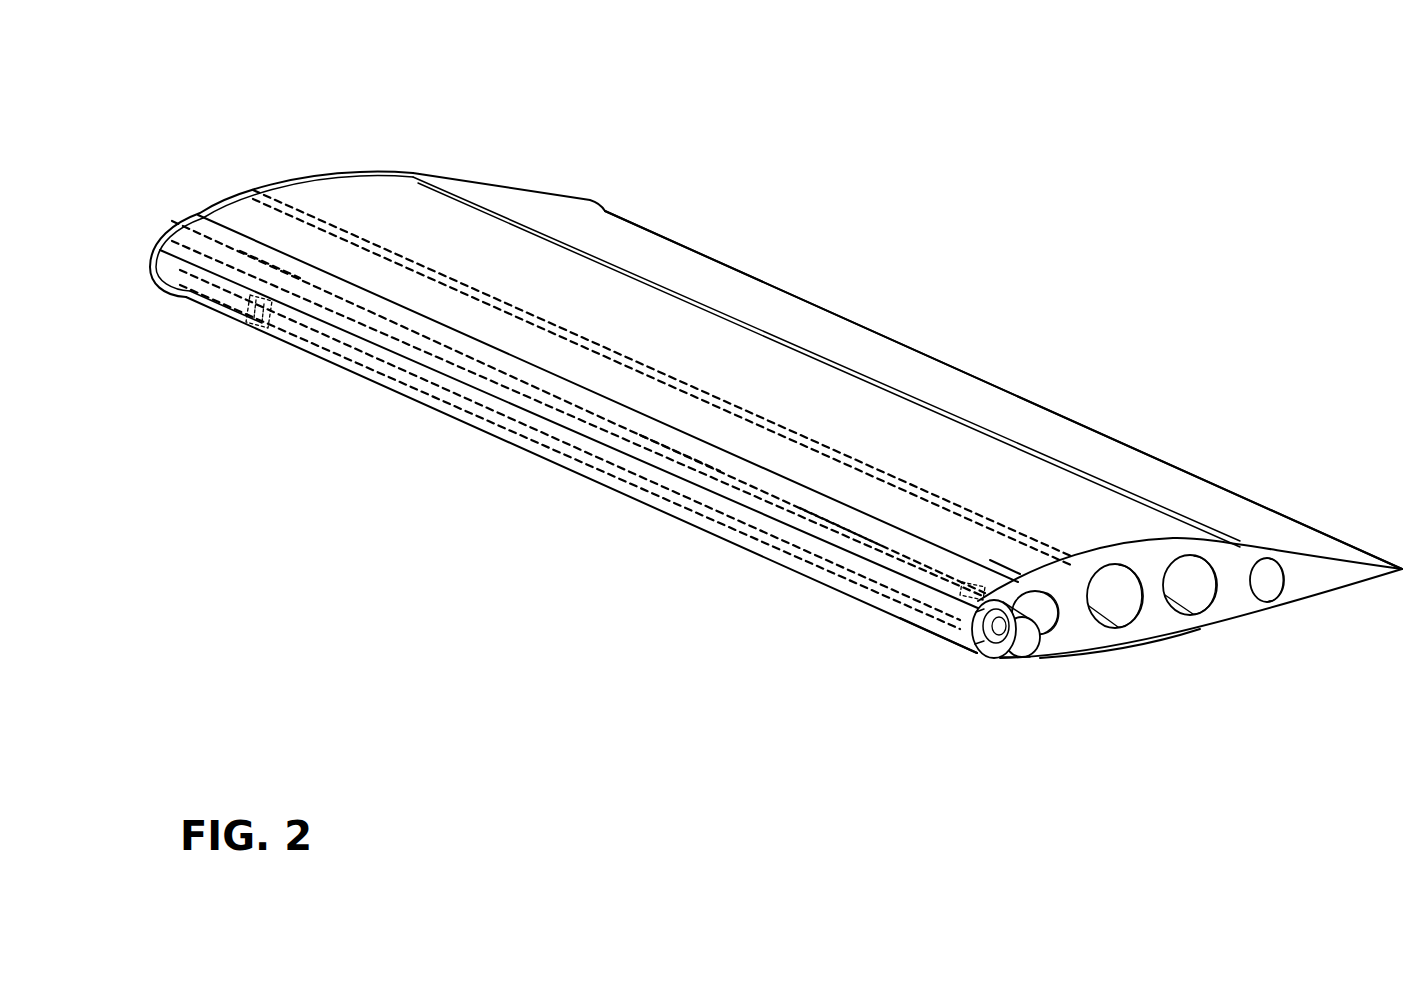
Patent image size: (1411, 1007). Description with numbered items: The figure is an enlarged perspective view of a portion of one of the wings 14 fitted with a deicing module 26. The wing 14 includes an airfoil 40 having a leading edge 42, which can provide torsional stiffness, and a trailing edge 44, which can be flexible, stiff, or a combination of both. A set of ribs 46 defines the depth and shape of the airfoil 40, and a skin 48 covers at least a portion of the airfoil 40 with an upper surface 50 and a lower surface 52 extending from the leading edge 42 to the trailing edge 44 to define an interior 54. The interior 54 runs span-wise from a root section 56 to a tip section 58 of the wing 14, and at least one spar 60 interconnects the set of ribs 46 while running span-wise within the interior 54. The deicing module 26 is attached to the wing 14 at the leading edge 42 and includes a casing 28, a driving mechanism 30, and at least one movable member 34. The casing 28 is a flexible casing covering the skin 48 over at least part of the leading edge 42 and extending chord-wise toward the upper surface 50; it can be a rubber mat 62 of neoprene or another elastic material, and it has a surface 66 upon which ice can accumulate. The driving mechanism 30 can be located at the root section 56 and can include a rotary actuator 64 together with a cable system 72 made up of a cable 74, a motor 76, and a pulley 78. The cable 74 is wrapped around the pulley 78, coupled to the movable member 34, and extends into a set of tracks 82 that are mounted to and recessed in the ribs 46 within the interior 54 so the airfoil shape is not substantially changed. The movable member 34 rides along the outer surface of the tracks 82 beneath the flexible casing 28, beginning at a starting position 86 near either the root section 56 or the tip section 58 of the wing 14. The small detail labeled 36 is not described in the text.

The wing 14 is at (985, 161).
The deicing module 26 is at (700, 548).
The casing 28 is at (872, 535).
The driving mechanism 30 is at (1000, 656).
The movable member 34 is at (983, 586).
The fastener detail 36 is at (257, 322).
The airfoil 40 is at (1340, 584).
The leading edge 42 is at (470, 395).
The trailing edge 44 is at (833, 309).
The set of ribs 46 is at (1165, 617).
The skin 48 is at (363, 202).
The upper surface 50 is at (1184, 538).
The lower surface 52 is at (1270, 617).
The interior 54 is at (1110, 604).
The root section 56 is at (1085, 667).
The tip section 58 is at (240, 187).
The spar 60 is at (568, 336).
The rubber mat 62 is at (210, 224).
The rotary actuator 64 is at (1033, 652).
The surface 66 is at (570, 414).
The cable system 72 is at (943, 646).
The cable 74 is at (982, 658).
The motor 76 is at (1052, 646).
The pulley 78 is at (1016, 658).
The set of tracks 82 is at (682, 456).
The starting position 86 is at (266, 278).